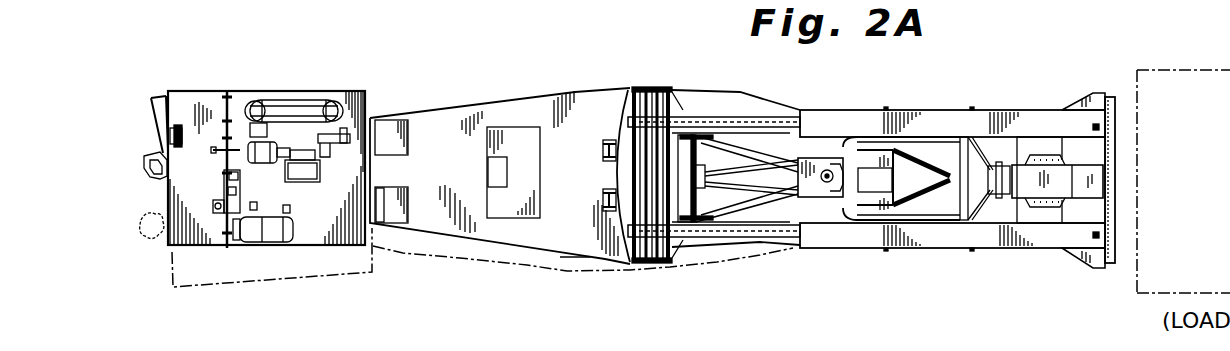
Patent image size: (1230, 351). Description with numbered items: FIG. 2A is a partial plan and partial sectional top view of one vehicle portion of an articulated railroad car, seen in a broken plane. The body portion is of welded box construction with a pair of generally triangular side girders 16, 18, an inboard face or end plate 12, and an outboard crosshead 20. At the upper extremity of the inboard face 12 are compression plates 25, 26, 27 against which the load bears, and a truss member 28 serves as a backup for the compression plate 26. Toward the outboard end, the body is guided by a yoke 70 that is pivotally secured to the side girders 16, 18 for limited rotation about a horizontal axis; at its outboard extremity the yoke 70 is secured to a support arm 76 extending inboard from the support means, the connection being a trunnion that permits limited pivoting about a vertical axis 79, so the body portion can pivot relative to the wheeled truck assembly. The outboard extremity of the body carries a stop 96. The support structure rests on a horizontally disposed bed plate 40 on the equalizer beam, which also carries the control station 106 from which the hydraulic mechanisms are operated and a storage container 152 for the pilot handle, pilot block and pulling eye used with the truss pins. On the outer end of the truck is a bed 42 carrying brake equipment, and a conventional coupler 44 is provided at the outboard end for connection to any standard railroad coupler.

The inboard face 12 is at (1113, 140).
The side girder 16 is at (925, 235).
The side girder 18 is at (910, 118).
The outboard crosshead 20 is at (621, 110).
The compression plate 25 is at (1113, 243).
The compression plate 26 is at (1117, 157).
The compression plate 27 is at (1117, 107).
The truss member 28 is at (1062, 182).
The bed plate 40 is at (436, 122).
The bed 42 is at (320, 240).
The coupler 44 is at (150, 178).
The yoke 70 is at (772, 147).
The support arm 76 is at (790, 197).
The vertical axis 79 is at (826, 183).
The stop 96 is at (610, 197).
The control station 106 is at (532, 162).
The storage container 152 is at (385, 213).